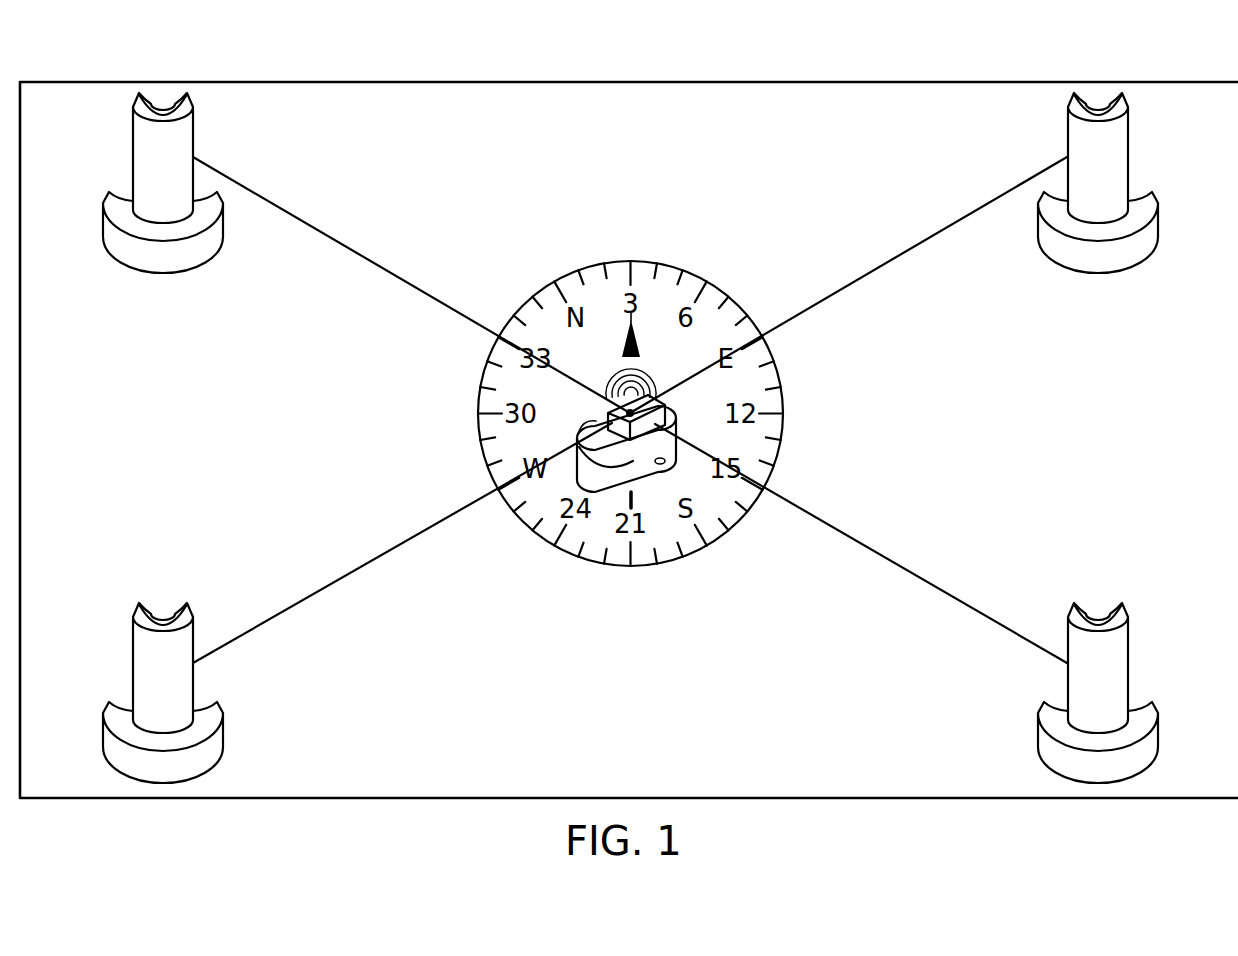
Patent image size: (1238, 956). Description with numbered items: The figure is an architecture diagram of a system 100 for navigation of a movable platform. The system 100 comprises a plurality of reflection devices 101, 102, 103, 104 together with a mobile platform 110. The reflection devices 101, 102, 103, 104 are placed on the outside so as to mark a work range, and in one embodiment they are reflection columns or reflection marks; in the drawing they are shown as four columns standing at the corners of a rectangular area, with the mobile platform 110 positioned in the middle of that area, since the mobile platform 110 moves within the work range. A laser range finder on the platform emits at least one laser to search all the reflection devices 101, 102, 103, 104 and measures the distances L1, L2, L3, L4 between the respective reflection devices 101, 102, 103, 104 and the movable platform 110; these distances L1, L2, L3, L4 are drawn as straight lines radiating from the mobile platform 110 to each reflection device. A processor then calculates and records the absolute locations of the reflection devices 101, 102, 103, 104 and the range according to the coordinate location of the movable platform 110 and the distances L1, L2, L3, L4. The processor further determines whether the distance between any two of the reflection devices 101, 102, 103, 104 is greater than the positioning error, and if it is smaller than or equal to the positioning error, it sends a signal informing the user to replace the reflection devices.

The system for navigation of a movable platform 100 is at (703, 82).
The reflection device 101 is at (1129, 150).
The reflection device 102 is at (133, 155).
The reflection device 103 is at (133, 662).
The reflection device 104 is at (1157, 663).
The mobile platform 110 is at (680, 420).
The distance L1 is at (942, 229).
The distance L2 is at (321, 228).
The distance L3 is at (352, 571).
The distance L4 is at (908, 570).